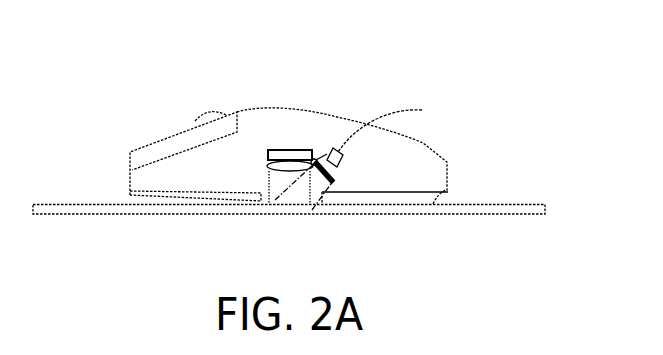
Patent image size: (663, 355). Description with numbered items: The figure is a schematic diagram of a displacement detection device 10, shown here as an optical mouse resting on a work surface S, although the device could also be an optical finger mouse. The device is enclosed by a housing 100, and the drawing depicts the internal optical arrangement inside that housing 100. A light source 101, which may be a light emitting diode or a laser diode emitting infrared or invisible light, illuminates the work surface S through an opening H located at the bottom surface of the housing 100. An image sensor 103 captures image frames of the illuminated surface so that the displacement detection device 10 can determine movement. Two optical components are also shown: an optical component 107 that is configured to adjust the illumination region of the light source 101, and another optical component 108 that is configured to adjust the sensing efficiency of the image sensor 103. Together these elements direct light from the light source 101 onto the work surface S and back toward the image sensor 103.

The displacement detection device 10 is at (172, 95).
The housing 100 is at (423, 143).
The light source 101 is at (399, 124).
The image sensor 103 is at (283, 149).
The optical component 107 is at (333, 164).
The optical component 108 is at (316, 152).
The work surface S is at (494, 210).
The opening H is at (302, 200).